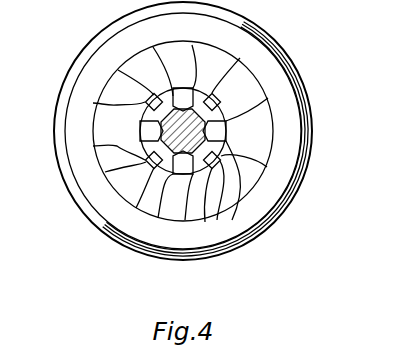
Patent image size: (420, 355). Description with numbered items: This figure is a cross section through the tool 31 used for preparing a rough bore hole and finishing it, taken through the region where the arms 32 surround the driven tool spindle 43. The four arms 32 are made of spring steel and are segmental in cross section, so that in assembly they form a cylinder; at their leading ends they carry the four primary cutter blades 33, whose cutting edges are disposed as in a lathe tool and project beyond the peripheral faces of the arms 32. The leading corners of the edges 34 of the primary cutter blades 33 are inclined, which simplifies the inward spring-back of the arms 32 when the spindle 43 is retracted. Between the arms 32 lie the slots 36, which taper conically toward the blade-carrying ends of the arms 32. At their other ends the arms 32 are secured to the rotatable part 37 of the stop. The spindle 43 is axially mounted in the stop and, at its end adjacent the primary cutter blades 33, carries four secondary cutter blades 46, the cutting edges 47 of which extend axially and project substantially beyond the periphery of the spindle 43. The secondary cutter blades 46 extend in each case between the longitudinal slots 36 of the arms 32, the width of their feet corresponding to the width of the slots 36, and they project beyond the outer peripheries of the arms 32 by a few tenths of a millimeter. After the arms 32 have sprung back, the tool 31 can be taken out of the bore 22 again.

The bore 22 is at (108, 171).
The tool 31 is at (80, 220).
The arms 32 is at (162, 209).
The primary cutter blades 33 is at (174, 138).
The edges 34 is at (162, 158).
The slots 36 is at (180, 160).
The rotatable part 37 is at (292, 197).
The tool spindle 43 is at (199, 203).
The secondary cutter blades 46 is at (214, 73).
The cutting edges 47 is at (279, 122).